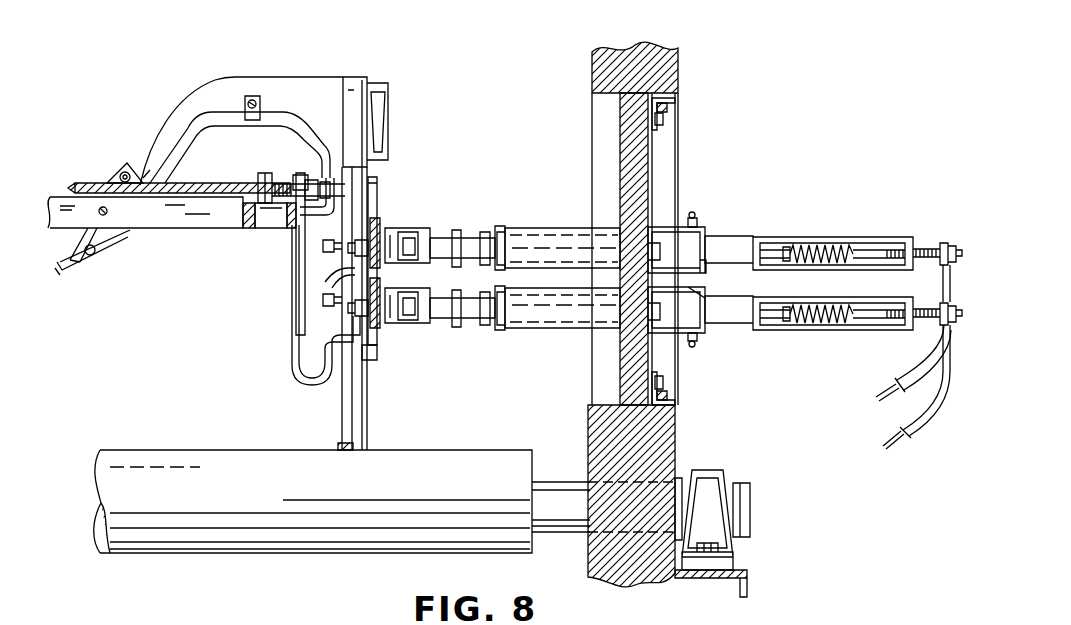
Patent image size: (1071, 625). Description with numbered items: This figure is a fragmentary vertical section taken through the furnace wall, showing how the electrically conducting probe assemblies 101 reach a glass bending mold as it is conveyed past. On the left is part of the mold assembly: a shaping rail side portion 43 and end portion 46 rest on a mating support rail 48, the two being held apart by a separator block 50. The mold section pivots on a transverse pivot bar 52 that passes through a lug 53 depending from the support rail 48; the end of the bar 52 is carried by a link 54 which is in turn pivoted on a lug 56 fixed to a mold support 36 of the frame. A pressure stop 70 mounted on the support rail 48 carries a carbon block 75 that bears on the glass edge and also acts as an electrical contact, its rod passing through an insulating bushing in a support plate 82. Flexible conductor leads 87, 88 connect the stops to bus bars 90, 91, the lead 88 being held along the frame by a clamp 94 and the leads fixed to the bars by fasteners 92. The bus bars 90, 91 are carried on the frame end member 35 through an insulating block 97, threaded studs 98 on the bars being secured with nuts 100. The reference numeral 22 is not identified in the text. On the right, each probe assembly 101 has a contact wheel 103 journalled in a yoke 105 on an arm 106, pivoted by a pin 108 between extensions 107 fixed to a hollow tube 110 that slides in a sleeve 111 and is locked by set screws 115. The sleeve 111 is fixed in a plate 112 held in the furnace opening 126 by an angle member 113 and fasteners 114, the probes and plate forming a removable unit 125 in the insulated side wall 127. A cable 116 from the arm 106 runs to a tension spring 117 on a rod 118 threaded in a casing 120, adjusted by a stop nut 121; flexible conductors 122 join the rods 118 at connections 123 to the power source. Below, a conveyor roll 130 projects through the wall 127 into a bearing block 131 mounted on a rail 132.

The support plate 22 is at (80, 183).
The end member 35 is at (350, 417).
The mold support 36 is at (177, 128).
The side portion 43 is at (137, 215).
The end portion 46 is at (240, 222).
The support rail 48 is at (291, 235).
The separator block 50 is at (265, 215).
The pivot bar 52 is at (85, 258).
The lug 53 is at (100, 258).
The link 54 is at (120, 173).
The lug 56 is at (138, 162).
The pressure stop 70 is at (287, 150).
The carbon block 75 is at (262, 170).
The support plate 82 is at (275, 170).
The conductor lead 87 is at (303, 373).
The conductor lead 88 is at (273, 118).
The bus bar 90 is at (370, 348).
The bus bar 91 is at (382, 236).
The fastener 92 is at (372, 238).
The clamp 94 is at (247, 98).
The insulating block 97 is at (375, 180).
The threaded stud 98 is at (330, 298).
The nut 100 is at (357, 307).
The probe assembly 101 is at (524, 108).
The contact wheel 103 is at (407, 233).
The yoke 105 is at (443, 230).
The arm 106 is at (500, 226).
The extension 107 is at (485, 232).
The pivot pin 108 is at (463, 228).
The hollow tube 110 is at (580, 250).
The sleeve 111 is at (577, 245).
The plate 112 is at (652, 177).
The angle member 113 is at (653, 120).
The fastener 114 is at (672, 115).
The set screw 115 is at (700, 217).
The cable 116 is at (572, 303).
The tension spring 117 is at (805, 255).
The rod 118 is at (862, 255).
The casing 120 is at (775, 237).
The stop nut 121 is at (920, 247).
The flexible conductor 122 is at (922, 417).
The connection 123 is at (943, 243).
The removable unit 125 is at (790, 135).
The opening 126 is at (592, 108).
The side wall 127 is at (650, 62).
The conveyor roll 130 is at (106, 455).
The bearing block 131 is at (727, 472).
The rail 132 is at (742, 567).